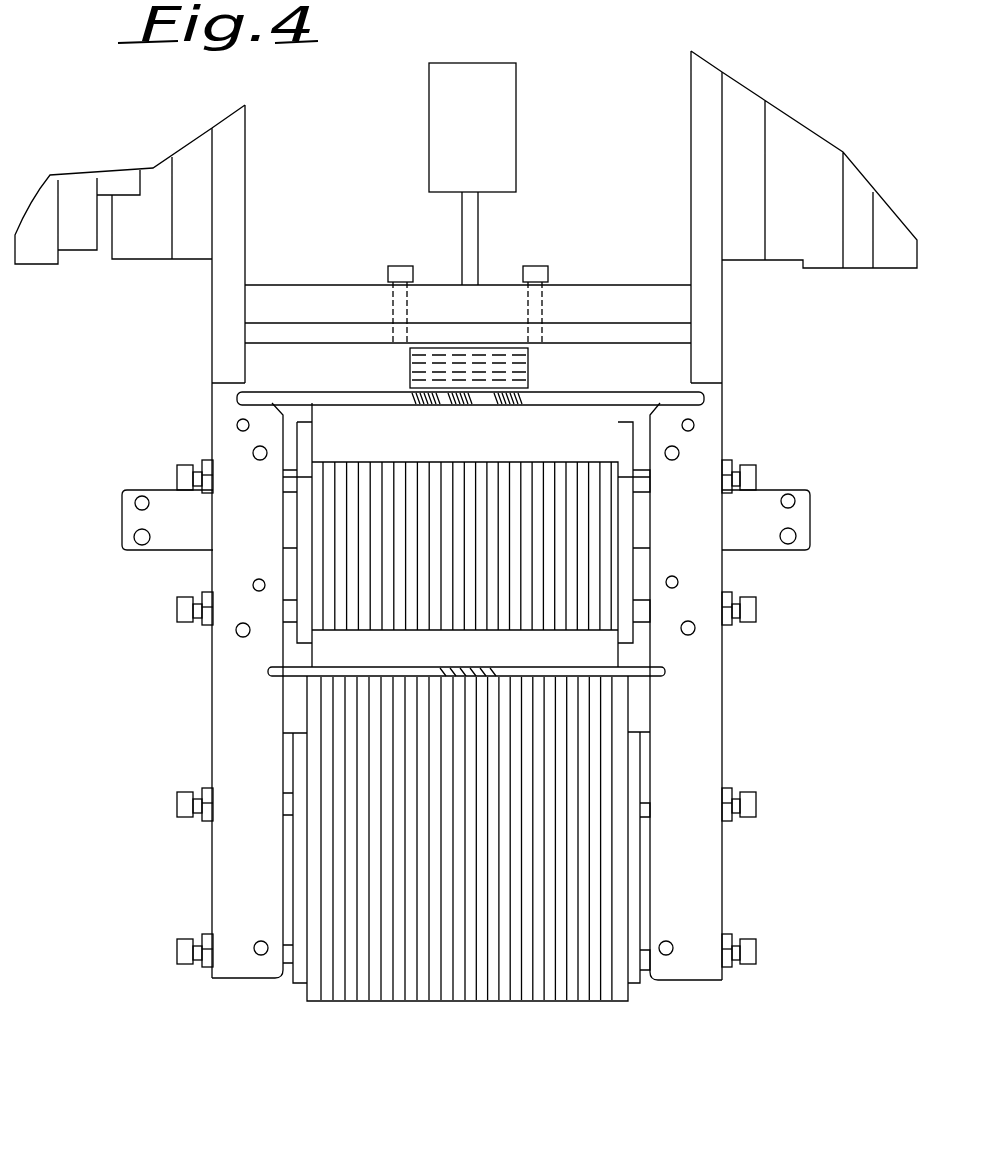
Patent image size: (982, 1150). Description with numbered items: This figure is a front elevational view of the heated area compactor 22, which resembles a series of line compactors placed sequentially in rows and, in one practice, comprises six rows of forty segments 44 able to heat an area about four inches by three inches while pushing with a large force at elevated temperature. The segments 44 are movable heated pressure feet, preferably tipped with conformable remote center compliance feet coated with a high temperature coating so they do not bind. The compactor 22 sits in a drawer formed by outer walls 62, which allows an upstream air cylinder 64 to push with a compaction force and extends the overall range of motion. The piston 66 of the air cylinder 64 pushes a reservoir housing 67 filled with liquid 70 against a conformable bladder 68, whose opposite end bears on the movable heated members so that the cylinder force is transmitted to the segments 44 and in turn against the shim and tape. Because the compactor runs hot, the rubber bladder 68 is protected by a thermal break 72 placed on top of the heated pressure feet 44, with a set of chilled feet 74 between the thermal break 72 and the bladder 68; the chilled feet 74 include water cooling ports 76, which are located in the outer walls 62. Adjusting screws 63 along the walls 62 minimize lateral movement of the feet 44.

The heated area compactor 22 is at (302, 1013).
The segments 44 is at (500, 990).
The walls 62 is at (230, 700).
The adjusting screws 63 is at (196, 808).
The air cylinder 64 is at (503, 111).
The piston 66 is at (467, 240).
The reservoir housing 67 is at (430, 343).
The conformable bladder 68 is at (440, 400).
The liquid 70 is at (487, 375).
The thermal break 72 is at (648, 672).
The chilled feet 74 is at (520, 470).
The cooling ports 76 is at (254, 450).